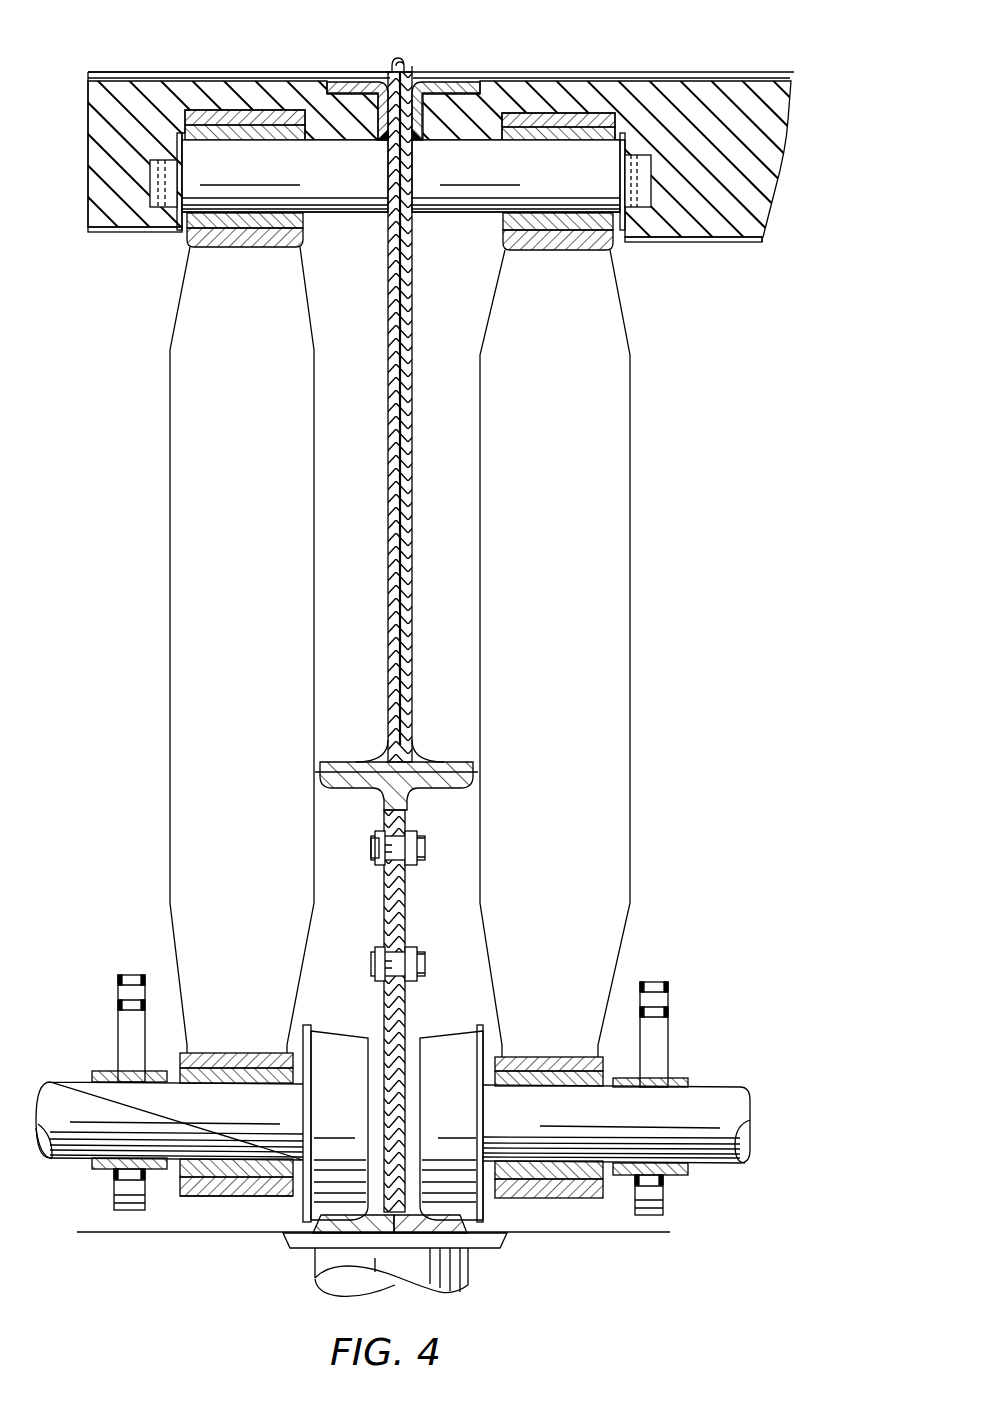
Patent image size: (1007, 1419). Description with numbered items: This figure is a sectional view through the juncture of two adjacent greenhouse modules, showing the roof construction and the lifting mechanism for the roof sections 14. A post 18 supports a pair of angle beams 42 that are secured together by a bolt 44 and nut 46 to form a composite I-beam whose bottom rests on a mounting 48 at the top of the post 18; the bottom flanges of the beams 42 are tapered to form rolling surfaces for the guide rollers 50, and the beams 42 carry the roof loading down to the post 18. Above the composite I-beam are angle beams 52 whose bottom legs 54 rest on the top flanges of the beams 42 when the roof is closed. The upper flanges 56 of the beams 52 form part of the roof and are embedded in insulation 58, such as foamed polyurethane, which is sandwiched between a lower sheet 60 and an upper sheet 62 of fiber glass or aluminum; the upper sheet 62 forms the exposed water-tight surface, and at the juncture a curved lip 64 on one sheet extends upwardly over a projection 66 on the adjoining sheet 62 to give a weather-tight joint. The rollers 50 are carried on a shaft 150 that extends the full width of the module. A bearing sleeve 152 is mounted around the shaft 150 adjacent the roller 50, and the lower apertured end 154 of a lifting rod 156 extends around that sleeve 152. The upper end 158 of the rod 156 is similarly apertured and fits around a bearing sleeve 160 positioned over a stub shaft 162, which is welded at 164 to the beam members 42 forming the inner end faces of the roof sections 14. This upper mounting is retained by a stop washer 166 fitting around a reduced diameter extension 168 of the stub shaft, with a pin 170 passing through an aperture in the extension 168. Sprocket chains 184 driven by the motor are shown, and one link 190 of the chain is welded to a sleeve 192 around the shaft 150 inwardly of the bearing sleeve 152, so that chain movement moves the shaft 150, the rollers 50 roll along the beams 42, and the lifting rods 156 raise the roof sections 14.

The roof sections 14 is at (278, 70).
The post 18 is at (470, 1265).
The angle beams 42 is at (392, 920).
The bolt 44 is at (416, 836).
The nut 46 is at (383, 862).
The base plate 48 is at (302, 1242).
The guide rollers 50 is at (428, 1040).
The angle beams 52 is at (410, 492).
The bottom legs 54 is at (400, 762).
The upper flanges 56 is at (372, 82).
The insulation 58 is at (190, 100).
The lower sheet 60 is at (130, 233).
The upper sheet 62 is at (118, 72).
The curved lip 64 is at (400, 57).
The projection 66 is at (407, 68).
The shaft 150 is at (72, 1092).
The bearing sleeve 152 is at (262, 1080).
The lower apertured end 154 is at (225, 1196).
The lifting rod 156 is at (243, 632).
The upper end 158 is at (300, 248).
The bearing sleeve 160 is at (200, 243).
The stub shaft 162 is at (372, 214).
The weld 164 is at (388, 140).
The stop washer 166 is at (185, 152).
The reduced diameter extension 168 is at (152, 185).
The pin 170 is at (178, 170).
The sprocket chains 184 is at (118, 980).
The link 190 is at (114, 1196).
The sleeve 192 is at (160, 1071).